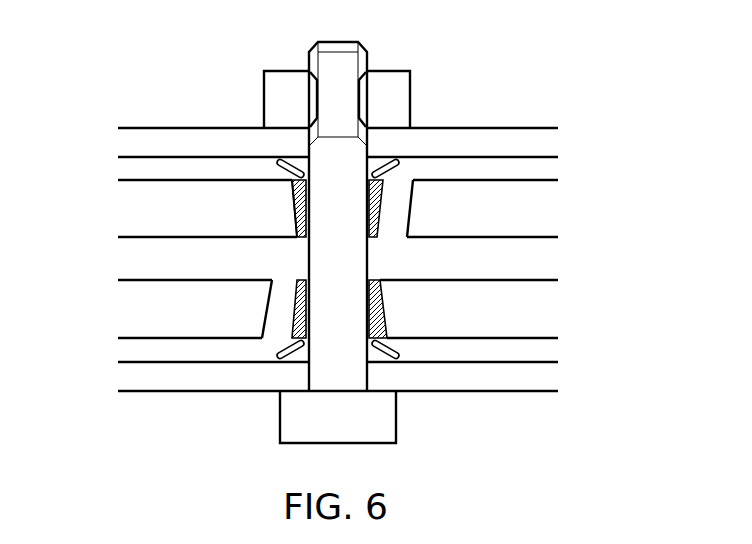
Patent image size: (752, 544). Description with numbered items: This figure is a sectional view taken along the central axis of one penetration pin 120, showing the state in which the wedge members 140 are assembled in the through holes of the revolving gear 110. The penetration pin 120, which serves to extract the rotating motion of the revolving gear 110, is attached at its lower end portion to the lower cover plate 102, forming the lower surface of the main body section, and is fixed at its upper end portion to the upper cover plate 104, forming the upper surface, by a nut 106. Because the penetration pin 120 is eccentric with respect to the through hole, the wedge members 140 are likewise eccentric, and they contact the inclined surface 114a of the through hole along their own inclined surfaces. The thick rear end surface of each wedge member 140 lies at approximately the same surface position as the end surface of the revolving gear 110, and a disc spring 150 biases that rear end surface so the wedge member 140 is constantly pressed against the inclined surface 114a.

The lower cover plate 102 is at (192, 392).
The upper cover plate 104 is at (505, 127).
The nut 106 is at (290, 70).
The revolving gear 110 is at (188, 178).
The hole edge of intermediate plate 114a is at (293, 238).
The penetration pin 120 is at (398, 415).
The wedge member 140 is at (377, 238).
The disc spring 150 is at (399, 167).